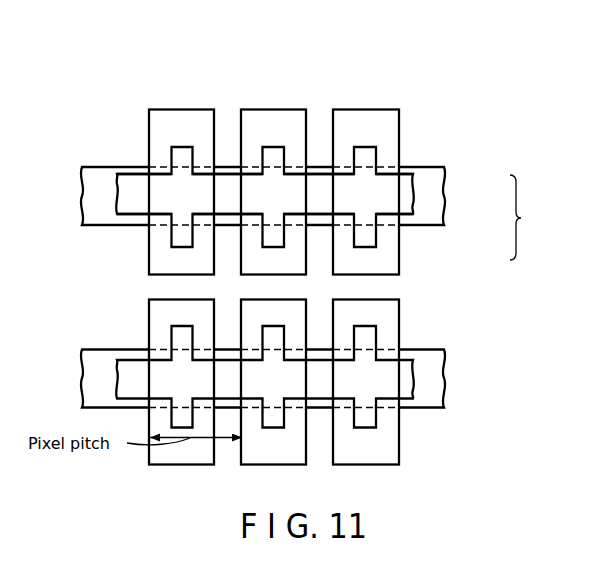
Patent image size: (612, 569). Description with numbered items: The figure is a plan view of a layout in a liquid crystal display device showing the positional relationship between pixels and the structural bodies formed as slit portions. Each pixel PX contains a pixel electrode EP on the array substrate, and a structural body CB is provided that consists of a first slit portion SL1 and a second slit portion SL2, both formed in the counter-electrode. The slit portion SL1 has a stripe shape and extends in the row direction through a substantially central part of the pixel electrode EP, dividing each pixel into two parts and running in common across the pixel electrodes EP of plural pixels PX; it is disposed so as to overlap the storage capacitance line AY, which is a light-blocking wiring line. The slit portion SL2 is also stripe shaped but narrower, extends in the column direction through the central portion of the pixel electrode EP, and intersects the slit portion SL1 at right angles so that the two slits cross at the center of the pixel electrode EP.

The pixel PX is at (405, 109).
The storage capacitance line AY is at (82, 199).
The pixel electrode EP is at (284, 118).
The slit portion (first slit portion) SL1 is at (413, 189).
The slit portion (second slit portion) SL2 is at (376, 237).
The structural body CB is at (533, 217).